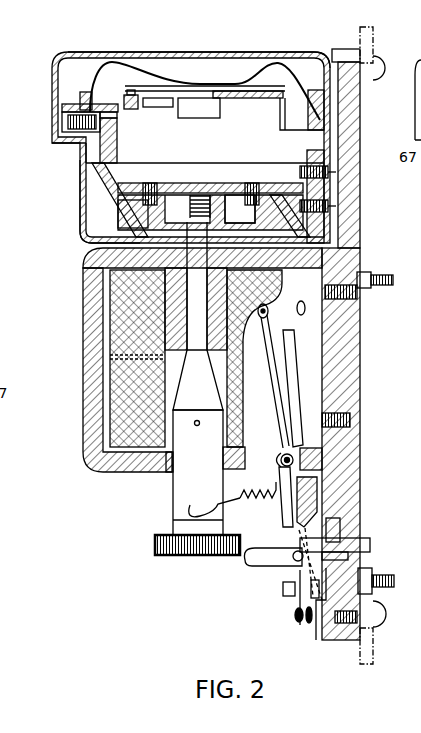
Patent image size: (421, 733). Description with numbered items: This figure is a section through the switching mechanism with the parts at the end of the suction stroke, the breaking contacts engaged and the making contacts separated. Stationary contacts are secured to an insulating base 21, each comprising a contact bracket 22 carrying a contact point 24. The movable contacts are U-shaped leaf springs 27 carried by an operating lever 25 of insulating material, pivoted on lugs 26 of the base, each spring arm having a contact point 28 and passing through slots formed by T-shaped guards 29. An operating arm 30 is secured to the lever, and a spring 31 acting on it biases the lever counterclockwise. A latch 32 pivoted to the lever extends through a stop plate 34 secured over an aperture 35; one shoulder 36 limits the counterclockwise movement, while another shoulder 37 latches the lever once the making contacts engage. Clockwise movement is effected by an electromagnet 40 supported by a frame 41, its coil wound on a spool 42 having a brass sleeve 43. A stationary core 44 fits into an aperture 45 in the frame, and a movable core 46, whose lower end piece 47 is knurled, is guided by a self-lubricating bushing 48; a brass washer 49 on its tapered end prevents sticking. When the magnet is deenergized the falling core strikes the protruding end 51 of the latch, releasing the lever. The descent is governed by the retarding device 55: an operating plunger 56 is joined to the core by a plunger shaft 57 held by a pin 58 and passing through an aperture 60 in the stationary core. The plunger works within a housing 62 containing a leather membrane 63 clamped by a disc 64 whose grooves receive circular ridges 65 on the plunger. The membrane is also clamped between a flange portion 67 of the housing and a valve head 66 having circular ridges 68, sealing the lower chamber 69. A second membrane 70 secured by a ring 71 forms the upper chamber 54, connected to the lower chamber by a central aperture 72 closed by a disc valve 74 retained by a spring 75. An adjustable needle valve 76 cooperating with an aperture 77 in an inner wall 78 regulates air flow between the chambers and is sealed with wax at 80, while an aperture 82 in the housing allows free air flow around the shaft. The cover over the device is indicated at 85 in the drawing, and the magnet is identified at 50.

The insulating base 21 is at (360, 175).
The contact bracket 22 is at (304, 316).
The contact point 24 is at (308, 622).
The operating lever 25 is at (300, 402).
The lugs 26 is at (313, 447).
The leaf spring 27 is at (298, 598).
The contact point 28 is at (297, 620).
The T-shaped guards 29 is at (283, 589).
The operating arm 30 is at (280, 492).
The spring 31 is at (252, 488).
The latch 32 is at (370, 543).
The stop plate 34 is at (314, 511).
The aperture 35 is at (343, 523).
The shoulder 36 is at (372, 570).
The shoulder 37 is at (352, 556).
The electromagnet 40 is at (110, 290).
The frame 41 is at (90, 268).
The spool 42 is at (110, 357).
The sleeve 43 is at (245, 385).
The stationary core 44 is at (270, 283).
The aperture 45 is at (258, 196).
The movable core 46 is at (198, 472).
The end piece 47 is at (212, 556).
The self-lubricating bushing 48 is at (168, 472).
The brass washer 49 is at (198, 316).
The spring hook 50 is at (194, 504).
The protruding end 51 is at (252, 552).
The upper chamber 54 is at (301, 102).
The retarding device 55 is at (80, 188).
The operating plunger 56 is at (108, 205).
The plunger shaft 57 is at (188, 214).
The pin 58 is at (200, 424).
The aperture 60 is at (268, 307).
The housing 62 is at (80, 210).
The membrane 63 is at (200, 200).
The disc 64 is at (160, 183).
The circular ridges 65 is at (253, 183).
The valve head 66 is at (272, 98).
The flange portion 67 is at (52, 143).
The circular ridges 68 is at (84, 147).
The lower chamber 69 is at (205, 151).
The membrane 70 is at (213, 84).
The ring 71 is at (84, 92).
The aperture 72 is at (208, 118).
The valve 74 is at (222, 98).
The spring 75 is at (127, 95).
The adjustable needle valve 76 is at (118, 112).
The aperture 77 is at (117, 118).
The inner wall 78 is at (117, 148).
The wax seal 80 is at (62, 121).
The aperture 82 is at (222, 200).
The cover 85 is at (236, 52).